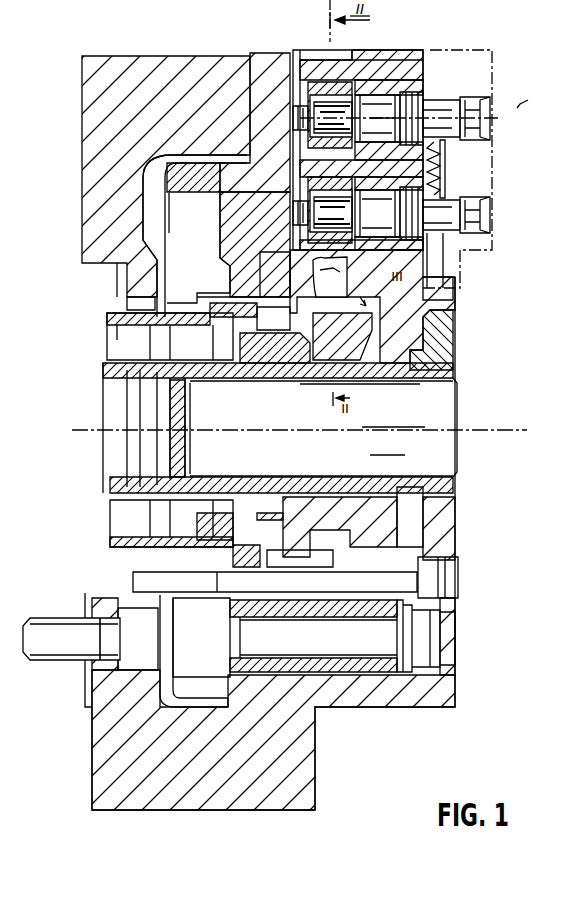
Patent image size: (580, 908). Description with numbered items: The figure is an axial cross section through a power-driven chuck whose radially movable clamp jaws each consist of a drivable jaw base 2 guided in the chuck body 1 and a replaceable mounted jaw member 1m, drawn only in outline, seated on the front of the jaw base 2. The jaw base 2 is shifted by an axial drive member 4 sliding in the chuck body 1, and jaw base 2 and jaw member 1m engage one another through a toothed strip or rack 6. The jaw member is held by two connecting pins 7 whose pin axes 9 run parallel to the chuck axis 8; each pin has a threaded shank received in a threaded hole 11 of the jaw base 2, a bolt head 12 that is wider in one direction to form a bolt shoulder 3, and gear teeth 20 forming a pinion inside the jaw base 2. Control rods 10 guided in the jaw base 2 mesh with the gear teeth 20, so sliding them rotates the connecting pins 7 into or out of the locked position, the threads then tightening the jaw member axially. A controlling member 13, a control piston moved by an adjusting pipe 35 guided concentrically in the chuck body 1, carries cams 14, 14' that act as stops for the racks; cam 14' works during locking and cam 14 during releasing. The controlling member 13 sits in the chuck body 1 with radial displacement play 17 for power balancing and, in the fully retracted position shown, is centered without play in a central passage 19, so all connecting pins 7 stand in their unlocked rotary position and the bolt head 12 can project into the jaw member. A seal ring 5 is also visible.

The chuck body 1 is at (273, 72).
The mounted jaw member 1m is at (480, 265).
The jaw base 2 is at (368, 63).
The bolt shoulder 3 is at (470, 222).
The axial drive member 4 is at (233, 223).
The seal ring 5 is at (280, 200).
The toothed strip or rack 6 is at (446, 165).
The connecting pin 7 is at (440, 123).
The chuck axis 8 is at (512, 425).
The pin axis 9 is at (530, 98).
The control rod 10 is at (333, 270).
The threaded hole 11 is at (388, 82).
The bolt head 12 is at (478, 100).
The controlling member 13 is at (297, 383).
The cam 14 is at (319, 370).
The cam 14' is at (353, 336).
The radial displacement play 17 is at (358, 474).
The central passage 19 is at (272, 263).
The gear teeth 20 is at (377, 213).
The adjusting pipe 35 is at (107, 340).